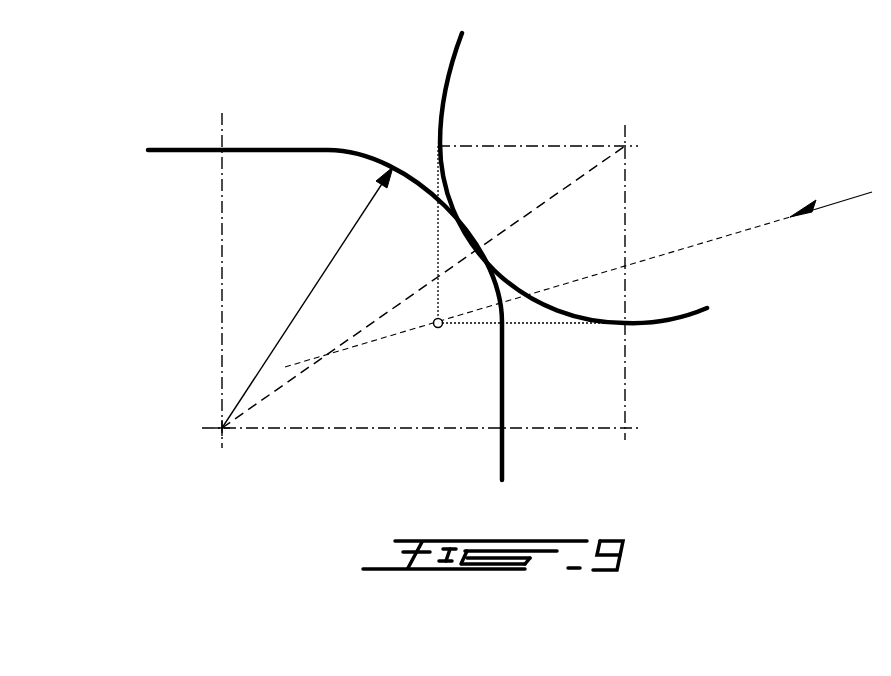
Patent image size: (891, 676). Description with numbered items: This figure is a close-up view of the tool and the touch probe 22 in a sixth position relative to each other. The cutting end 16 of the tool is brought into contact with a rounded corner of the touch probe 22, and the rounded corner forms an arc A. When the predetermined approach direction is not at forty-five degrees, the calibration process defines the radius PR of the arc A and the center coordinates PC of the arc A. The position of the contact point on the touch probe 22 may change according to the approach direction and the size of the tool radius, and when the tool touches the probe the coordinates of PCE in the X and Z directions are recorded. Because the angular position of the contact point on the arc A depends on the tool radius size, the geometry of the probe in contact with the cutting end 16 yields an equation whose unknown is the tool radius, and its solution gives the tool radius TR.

The cutting end 16 is at (578, 210).
The touch probe 22 is at (379, 413).
The arc A is at (564, 170).
The tool radius TR is at (538, 132).
The radius of the arc PR is at (307, 297).
The center coordinates of the arc PC is at (238, 444).
The contact point coordinates PCE is at (461, 342).